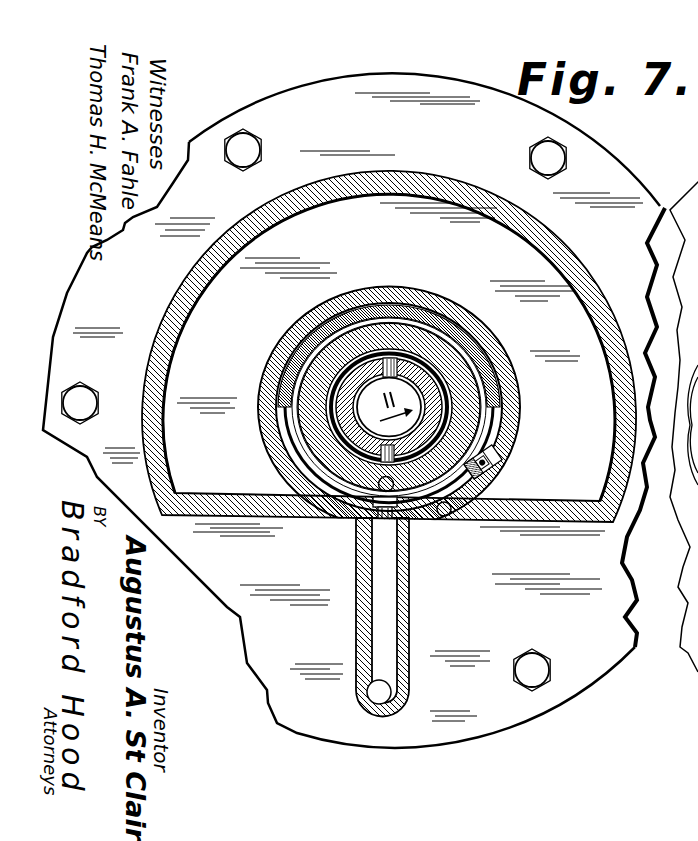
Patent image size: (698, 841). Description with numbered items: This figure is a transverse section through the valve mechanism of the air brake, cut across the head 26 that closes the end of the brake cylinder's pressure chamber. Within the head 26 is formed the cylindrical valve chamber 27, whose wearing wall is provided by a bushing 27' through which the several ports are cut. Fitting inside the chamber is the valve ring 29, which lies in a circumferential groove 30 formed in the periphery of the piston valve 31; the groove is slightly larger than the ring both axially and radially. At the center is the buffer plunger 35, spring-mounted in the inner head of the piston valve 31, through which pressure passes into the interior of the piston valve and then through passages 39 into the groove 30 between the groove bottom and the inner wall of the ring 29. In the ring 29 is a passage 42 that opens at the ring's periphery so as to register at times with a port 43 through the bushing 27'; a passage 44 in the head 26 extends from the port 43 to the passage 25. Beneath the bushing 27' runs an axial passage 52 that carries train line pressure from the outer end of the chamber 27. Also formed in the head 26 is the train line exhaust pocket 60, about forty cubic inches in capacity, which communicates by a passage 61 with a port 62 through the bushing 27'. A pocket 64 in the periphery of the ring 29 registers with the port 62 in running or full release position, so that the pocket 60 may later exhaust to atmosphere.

The passage 25 is at (390, 692).
The head 26 is at (570, 683).
The cylindrical valve chamber 27 is at (343, 407).
The bushing 27' is at (362, 407).
The valve ring 29 is at (492, 422).
The circumferential groove 30 is at (435, 380).
The piston valve 31 is at (452, 407).
The buffer plunger 35 is at (397, 388).
The passages 39 is at (391, 360).
The passage 42 is at (338, 518).
The port 43 is at (360, 540).
The passage 44 is at (380, 610).
The passage 52 is at (490, 580).
The train line exhaust pocket 60 is at (250, 487).
The passage 61 is at (485, 478).
The port 62 is at (498, 470).
The pocket 64 is at (498, 455).